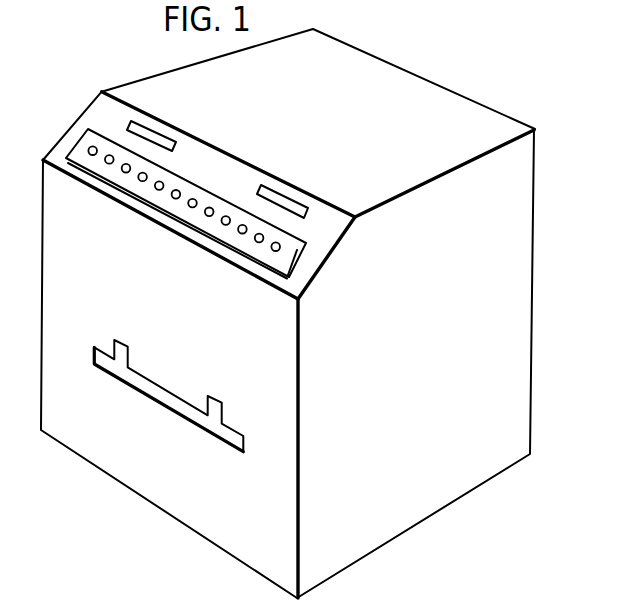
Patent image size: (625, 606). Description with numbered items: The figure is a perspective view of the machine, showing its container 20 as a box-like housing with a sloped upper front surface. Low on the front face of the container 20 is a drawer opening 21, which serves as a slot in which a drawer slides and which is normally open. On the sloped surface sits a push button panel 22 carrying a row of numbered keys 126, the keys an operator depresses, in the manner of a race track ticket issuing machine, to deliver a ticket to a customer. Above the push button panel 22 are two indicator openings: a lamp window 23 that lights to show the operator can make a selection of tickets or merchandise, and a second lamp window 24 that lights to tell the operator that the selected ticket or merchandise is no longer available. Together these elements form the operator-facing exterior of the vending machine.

The container 20 is at (440, 96).
The drawer opening 21 is at (159, 401).
The push button panel 22 is at (290, 250).
The lamp window 23 is at (155, 137).
The second lamp window 24 is at (285, 202).
The numbered key 126 is at (192, 207).